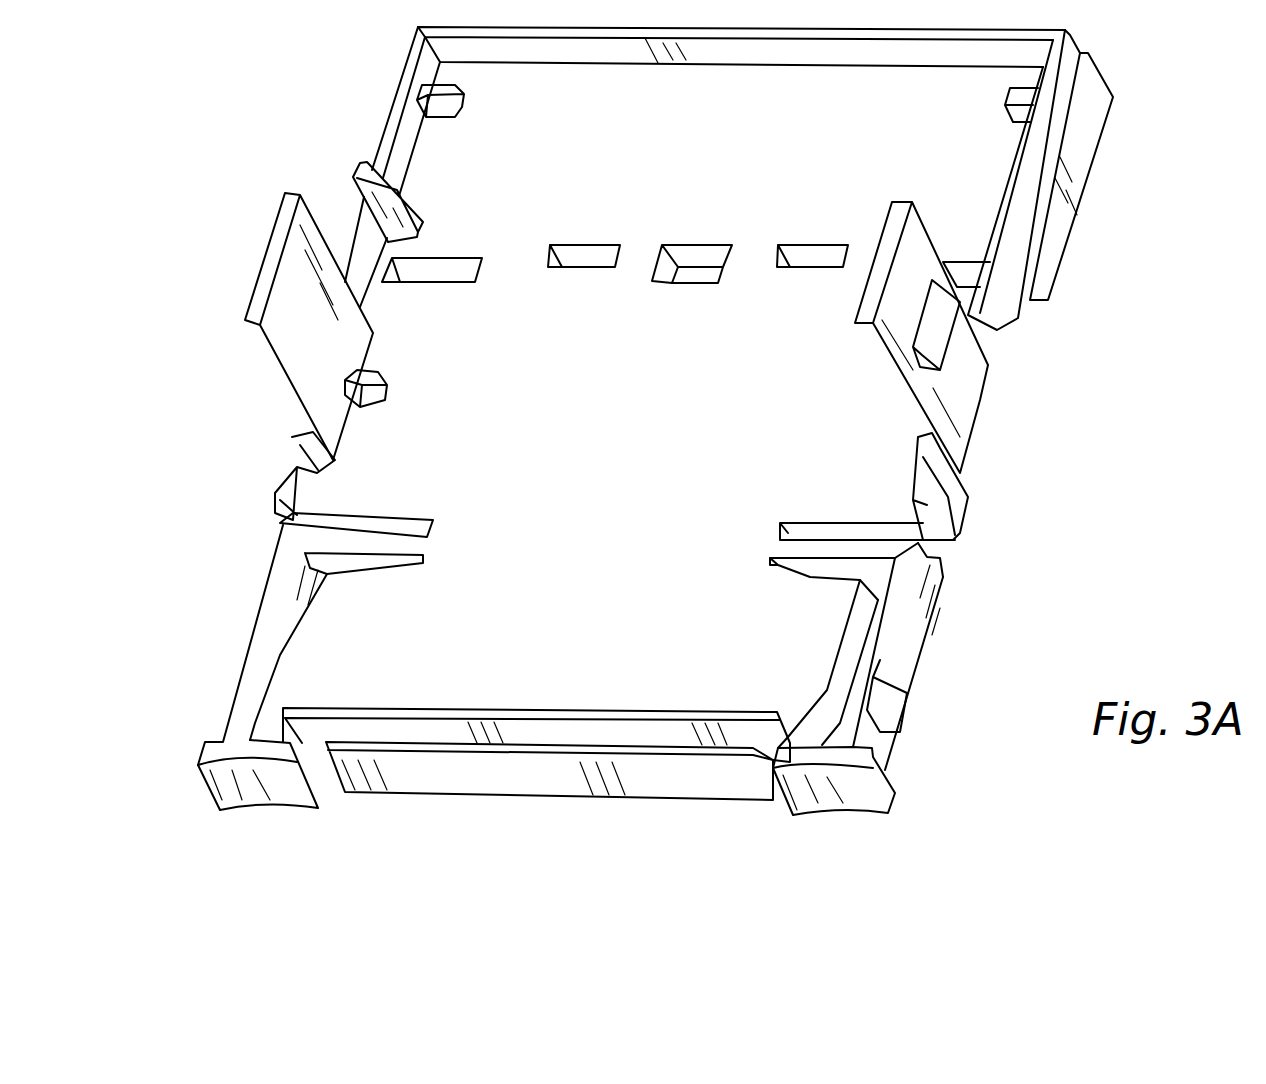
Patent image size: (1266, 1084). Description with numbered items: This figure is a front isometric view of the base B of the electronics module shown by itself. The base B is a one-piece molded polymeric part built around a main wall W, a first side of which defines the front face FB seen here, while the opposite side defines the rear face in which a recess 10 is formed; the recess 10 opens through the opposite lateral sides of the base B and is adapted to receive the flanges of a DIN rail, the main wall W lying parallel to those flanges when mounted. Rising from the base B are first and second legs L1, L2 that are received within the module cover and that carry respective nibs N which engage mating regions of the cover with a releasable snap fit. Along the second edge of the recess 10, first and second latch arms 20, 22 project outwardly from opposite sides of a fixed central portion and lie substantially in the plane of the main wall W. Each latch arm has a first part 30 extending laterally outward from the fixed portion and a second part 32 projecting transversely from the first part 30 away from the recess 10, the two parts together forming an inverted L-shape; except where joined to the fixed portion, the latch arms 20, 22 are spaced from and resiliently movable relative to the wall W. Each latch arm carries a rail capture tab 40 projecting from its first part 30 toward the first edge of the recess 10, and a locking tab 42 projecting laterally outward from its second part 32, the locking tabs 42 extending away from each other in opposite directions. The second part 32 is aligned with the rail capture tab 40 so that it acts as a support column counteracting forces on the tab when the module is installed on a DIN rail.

The recess 10 is at (1043, 325).
The front face FB is at (792, 160).
The base B is at (512, 172).
The first leg L1 is at (276, 252).
The second leg L2 is at (870, 348).
The nib N is at (937, 333).
The main wall W is at (648, 364).
The first part 30 is at (368, 546).
The second latch arm 22 is at (262, 590).
The second part 32 is at (260, 643).
The first latch arm 20 is at (925, 657).
The rail capture tab 40 is at (943, 568).
The locking tab 42 is at (890, 707).